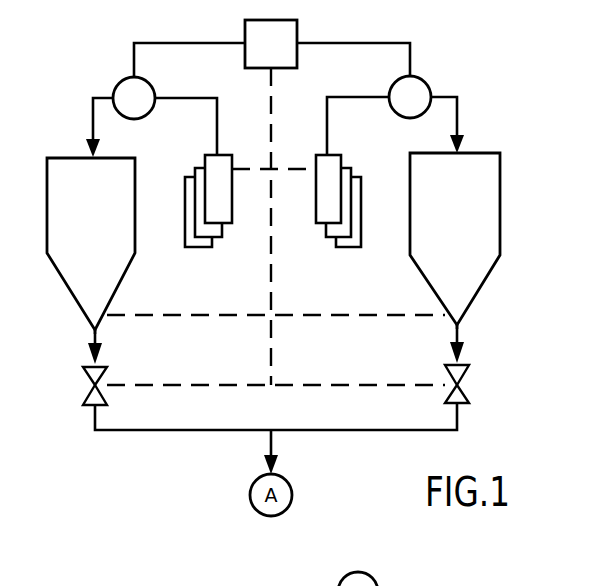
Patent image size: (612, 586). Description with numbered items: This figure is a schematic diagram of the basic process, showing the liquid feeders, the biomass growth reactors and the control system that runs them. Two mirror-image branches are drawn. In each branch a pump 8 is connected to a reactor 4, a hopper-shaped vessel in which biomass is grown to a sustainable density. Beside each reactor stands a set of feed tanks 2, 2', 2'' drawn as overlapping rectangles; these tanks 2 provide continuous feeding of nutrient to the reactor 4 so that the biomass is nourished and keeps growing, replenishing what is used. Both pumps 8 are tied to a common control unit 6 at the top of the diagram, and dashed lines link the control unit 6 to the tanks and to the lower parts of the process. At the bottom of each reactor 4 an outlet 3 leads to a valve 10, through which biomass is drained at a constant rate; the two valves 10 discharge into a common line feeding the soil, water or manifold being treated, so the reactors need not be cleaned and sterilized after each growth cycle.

The tank 2 is at (273, 197).
The sensor 2' is at (273, 219).
The sensor 2'' is at (273, 238).
The outlet of hopper 3 is at (92, 334).
The reactor 4 is at (100, 224).
The control unit 6 is at (281, 54).
The pump 8 is at (123, 79).
The valve 10 is at (83, 372).